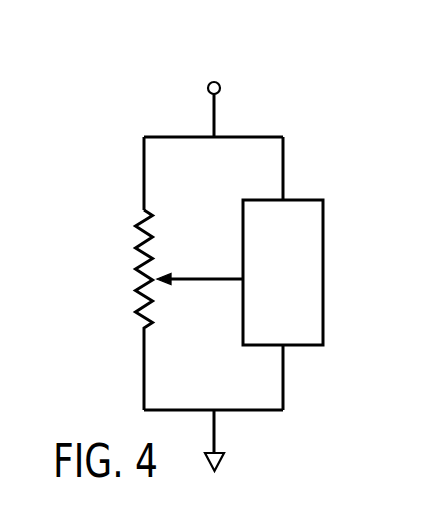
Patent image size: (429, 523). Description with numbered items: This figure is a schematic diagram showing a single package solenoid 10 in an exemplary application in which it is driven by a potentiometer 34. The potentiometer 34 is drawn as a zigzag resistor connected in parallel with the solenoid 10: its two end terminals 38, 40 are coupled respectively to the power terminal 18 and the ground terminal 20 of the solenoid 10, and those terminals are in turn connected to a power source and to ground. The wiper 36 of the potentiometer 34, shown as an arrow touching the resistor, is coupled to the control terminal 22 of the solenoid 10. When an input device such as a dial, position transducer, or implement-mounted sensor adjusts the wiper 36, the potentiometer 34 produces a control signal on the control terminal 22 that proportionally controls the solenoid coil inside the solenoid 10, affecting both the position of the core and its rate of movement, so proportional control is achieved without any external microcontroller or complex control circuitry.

The solenoid 10 is at (323, 272).
The power terminal 18 is at (283, 168).
The ground terminal 20 is at (283, 375).
The control terminal 22 is at (226, 282).
The potentiometer 34 is at (118, 237).
The wiper 36 is at (183, 273).
The potentiometer terminal 38 is at (144, 172).
The potentiometer terminal 40 is at (144, 372).